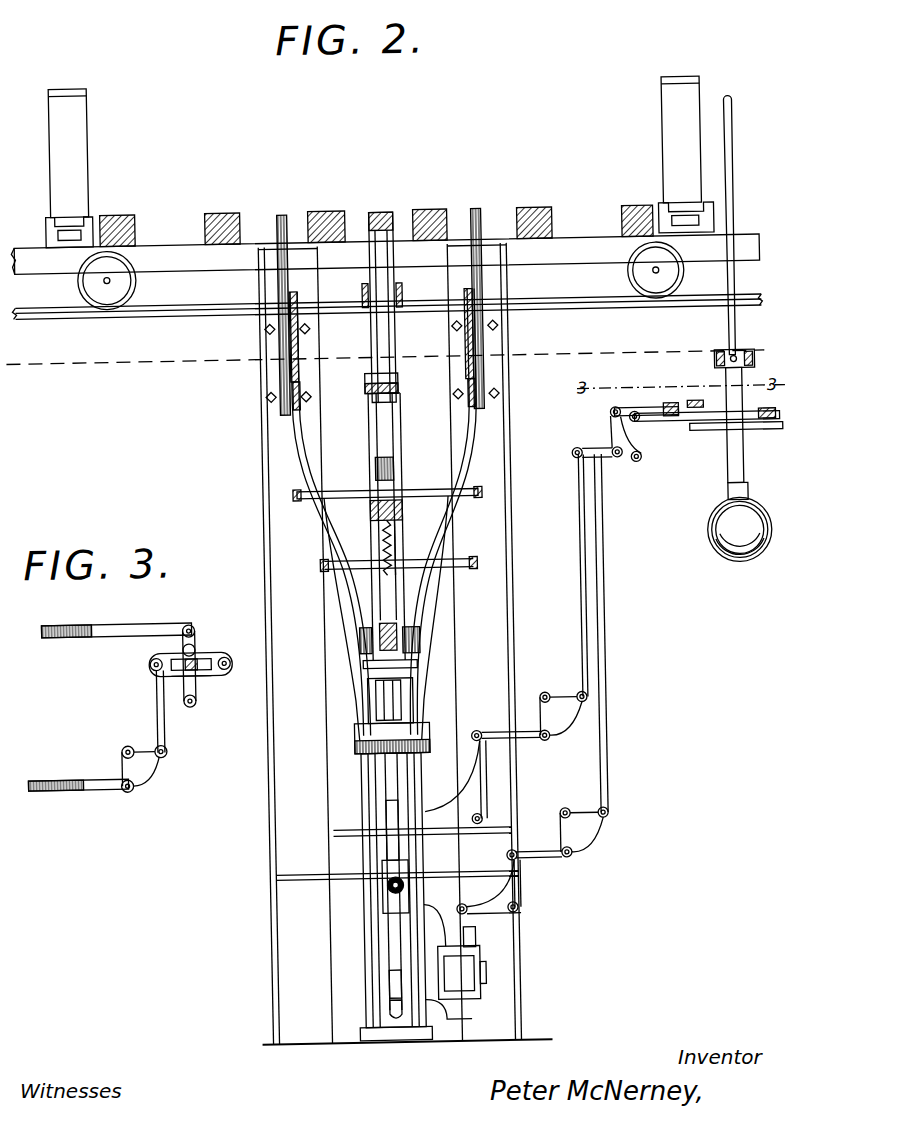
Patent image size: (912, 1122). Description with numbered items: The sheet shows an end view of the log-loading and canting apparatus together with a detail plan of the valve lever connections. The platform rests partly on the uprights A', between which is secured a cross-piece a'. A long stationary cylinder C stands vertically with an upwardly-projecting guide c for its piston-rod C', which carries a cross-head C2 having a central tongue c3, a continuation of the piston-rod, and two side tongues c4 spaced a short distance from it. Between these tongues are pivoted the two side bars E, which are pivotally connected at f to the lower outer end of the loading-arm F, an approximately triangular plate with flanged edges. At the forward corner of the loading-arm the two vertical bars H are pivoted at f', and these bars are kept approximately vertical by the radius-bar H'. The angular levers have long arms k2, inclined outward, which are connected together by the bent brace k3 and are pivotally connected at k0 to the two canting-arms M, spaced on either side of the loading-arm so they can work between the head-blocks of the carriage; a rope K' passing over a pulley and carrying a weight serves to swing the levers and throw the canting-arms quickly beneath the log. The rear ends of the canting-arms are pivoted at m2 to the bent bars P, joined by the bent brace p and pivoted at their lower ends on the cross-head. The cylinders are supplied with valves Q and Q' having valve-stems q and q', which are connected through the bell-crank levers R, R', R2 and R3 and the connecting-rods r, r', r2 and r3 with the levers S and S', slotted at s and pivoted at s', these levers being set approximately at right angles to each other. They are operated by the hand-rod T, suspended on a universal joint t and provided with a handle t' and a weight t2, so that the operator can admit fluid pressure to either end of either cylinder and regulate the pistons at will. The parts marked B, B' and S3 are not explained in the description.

In FIG. 2, the beam B is at (384, 228).
In FIG. 2, the hanger post B' is at (392, 145).
In FIG. 2, the canting-arm M is at (289, 250).
In FIG. 2, the pivot k0 is at (296, 300).
In FIG. 2, the loading-arm F is at (390, 225).
In FIG. 2, the pivot f' is at (393, 291).
In FIG. 2, the pivot f is at (392, 380).
In FIG. 2, the side bar E is at (373, 426).
In FIG. 2, the radius-bar H' is at (363, 466).
In FIG. 2, the rope K' is at (372, 538).
In FIG. 2, the bent brace k3 is at (405, 560).
In FIG. 2, the bent bar P is at (303, 492).
In FIG. 2, the bent brace p is at (415, 490).
In FIG. 2, the long arm k2 is at (300, 450).
In FIG. 2, the pivot m2 is at (280, 400).
In FIG. 2, the upright A' is at (386, 587).
In FIG. 2, the central tongue c3 is at (388, 637).
In FIG. 2, the side tongue c4 is at (360, 640).
In FIG. 2, the cross-head C2 is at (363, 662).
In FIG. 2, the piston-rod C' is at (432, 686).
In FIG. 2, the guide c is at (400, 700).
In FIG. 2, the vertical bar H is at (391, 722).
In FIG. 2, the long stationary cylinder C is at (383, 897).
In FIG. 2, the valve-stem q is at (371, 830).
In FIG. 2, the valve Q is at (417, 944).
In FIG. 2, the valve Q' is at (491, 951).
In FIG. 2, the valve-stem q' is at (513, 925).
In FIG. 2, the connecting-rod r is at (522, 794).
In FIG. 3, the connecting-rod r is at (30, 811).
In FIG. 2, the bell-crank lever R is at (488, 821).
In FIG. 2, the bell-crank lever R' is at (576, 774).
In FIG. 2, the connecting-rod r' is at (606, 633).
In FIG. 3, the connecting-rod r' is at (43, 656).
In FIG. 2, the bell-crank lever R2 is at (614, 450).
In FIG. 3, the bell-crank lever R2 is at (68, 620).
In FIG. 2, the connecting-rod r2 is at (658, 432).
In FIG. 3, the connecting-rod r2 is at (125, 624).
In FIG. 2, the bell-crank lever R3 is at (676, 408).
In FIG. 3, the bell-crank lever R3 is at (148, 758).
In FIG. 2, the connecting-rod r3 is at (699, 394).
In FIG. 2, the lever S' is at (737, 448).
In FIG. 3, the lever S' is at (210, 661).
In FIG. 2, the block S3 is at (755, 415).
In FIG. 3, the lever S is at (200, 691).
In FIG. 3, the slot s is at (196, 688).
In FIG. 3, the pivot s' is at (215, 693).
In FIG. 2, the hand-rod T is at (747, 457).
In FIG. 3, the hand-rod T is at (156, 680).
In FIG. 2, the handle t' is at (744, 225).
In FIG. 2, the universal joint t is at (736, 342).
In FIG. 2, the weight t2 is at (748, 566).
In FIG. 2, the cross-piece a' is at (396, 854).